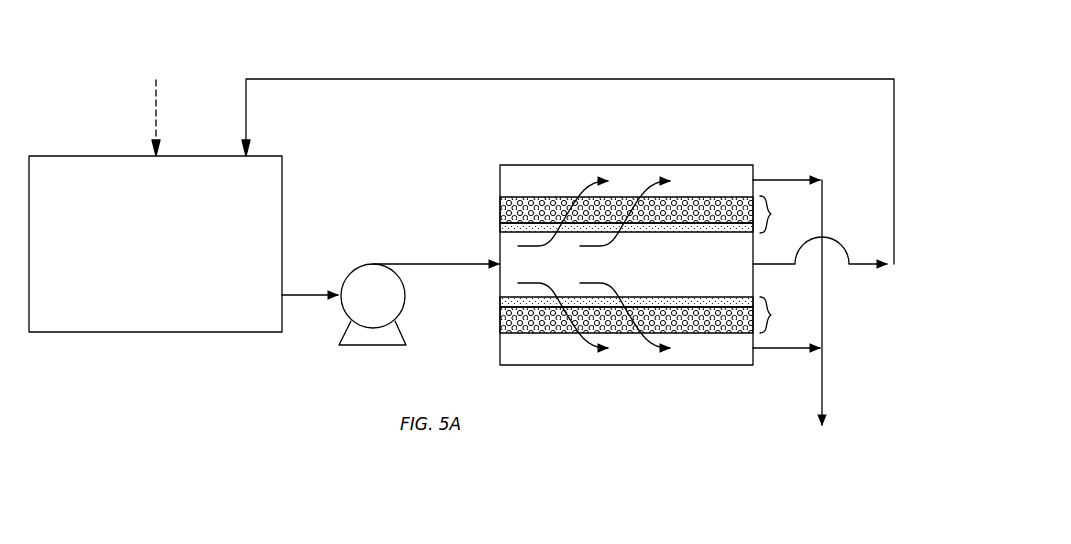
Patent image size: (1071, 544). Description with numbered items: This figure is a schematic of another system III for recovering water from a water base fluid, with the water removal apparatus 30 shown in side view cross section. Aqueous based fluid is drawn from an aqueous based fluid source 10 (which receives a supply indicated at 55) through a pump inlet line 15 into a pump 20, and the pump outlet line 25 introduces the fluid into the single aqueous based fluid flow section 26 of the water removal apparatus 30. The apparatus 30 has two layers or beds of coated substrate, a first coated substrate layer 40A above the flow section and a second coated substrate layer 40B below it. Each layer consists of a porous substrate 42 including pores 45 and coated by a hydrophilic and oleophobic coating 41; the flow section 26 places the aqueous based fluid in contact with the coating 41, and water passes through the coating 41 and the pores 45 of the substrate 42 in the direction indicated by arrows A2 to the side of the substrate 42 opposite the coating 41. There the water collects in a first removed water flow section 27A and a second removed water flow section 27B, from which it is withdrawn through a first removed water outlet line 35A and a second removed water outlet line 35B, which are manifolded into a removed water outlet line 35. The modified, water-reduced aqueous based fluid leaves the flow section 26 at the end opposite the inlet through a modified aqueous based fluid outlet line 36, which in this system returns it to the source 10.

The system III is at (247, 13).
The aqueous based fluid source 10 is at (168, 256).
The liquid supply 55 is at (153, 105).
The modified aqueous based fluid outlet line 36 is at (590, 79).
The pump inlet line 15 is at (302, 294).
The pump 20 is at (378, 347).
The pump outlet line 25 is at (434, 263).
The water removal apparatus 30 is at (664, 245).
The porous substrate 42 is at (500, 205).
The hydrophilic and oleophobic coating 41 is at (500, 228).
The pores 45 is at (612, 210).
The flow direction A2 is at (597, 181).
The aqueous based fluid flow section 26 is at (712, 278).
The first removed water flow section 27A is at (719, 194).
The second removed water flow section 27B is at (719, 361).
The removed water outlet line 35 is at (824, 318).
The first removed water outlet line 35A is at (775, 179).
The second removed water outlet line 35B is at (775, 350).
The first coated substrate layer 40A is at (787, 214).
The second coated substrate layer 40B is at (787, 315).